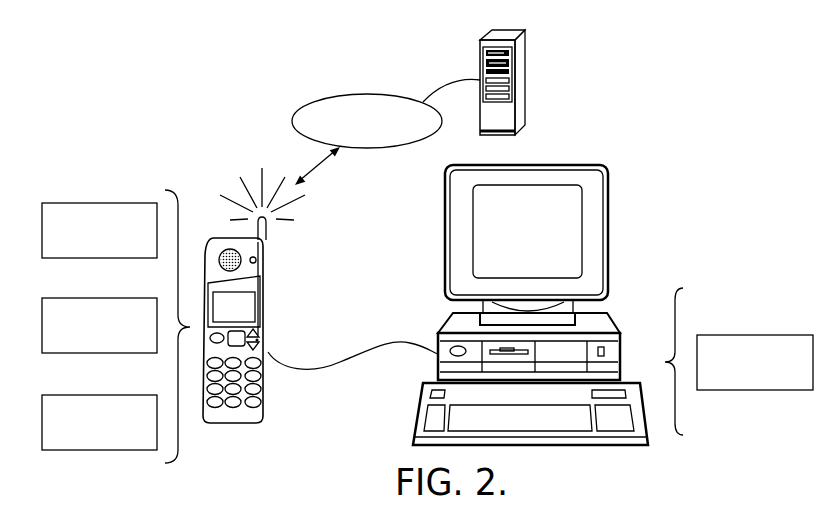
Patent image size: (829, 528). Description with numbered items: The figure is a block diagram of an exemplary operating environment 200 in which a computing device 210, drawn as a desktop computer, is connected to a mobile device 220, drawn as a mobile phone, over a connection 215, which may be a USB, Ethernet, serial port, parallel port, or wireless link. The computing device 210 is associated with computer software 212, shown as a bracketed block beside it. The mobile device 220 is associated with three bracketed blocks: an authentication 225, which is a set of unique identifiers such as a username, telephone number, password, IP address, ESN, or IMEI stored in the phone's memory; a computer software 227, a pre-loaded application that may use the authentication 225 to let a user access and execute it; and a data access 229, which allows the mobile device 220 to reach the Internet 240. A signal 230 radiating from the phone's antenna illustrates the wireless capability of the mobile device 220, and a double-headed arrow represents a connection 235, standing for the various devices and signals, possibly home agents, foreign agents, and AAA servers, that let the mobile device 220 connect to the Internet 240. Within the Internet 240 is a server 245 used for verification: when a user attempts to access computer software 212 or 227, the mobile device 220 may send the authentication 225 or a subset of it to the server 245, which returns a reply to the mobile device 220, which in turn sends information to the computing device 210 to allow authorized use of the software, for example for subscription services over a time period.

The operating environment 200 is at (662, 92).
The computing device 210 is at (622, 345).
The computer software 212 is at (753, 335).
The connection 215 is at (352, 357).
The mobile device 220 is at (235, 423).
The authentication 225 is at (99, 203).
The computer software 227 is at (99, 298).
The data access 229 is at (99, 395).
The signal 230 is at (253, 166).
The connection 235 is at (323, 166).
The Internet 240 is at (383, 147).
The server 245 is at (525, 82).